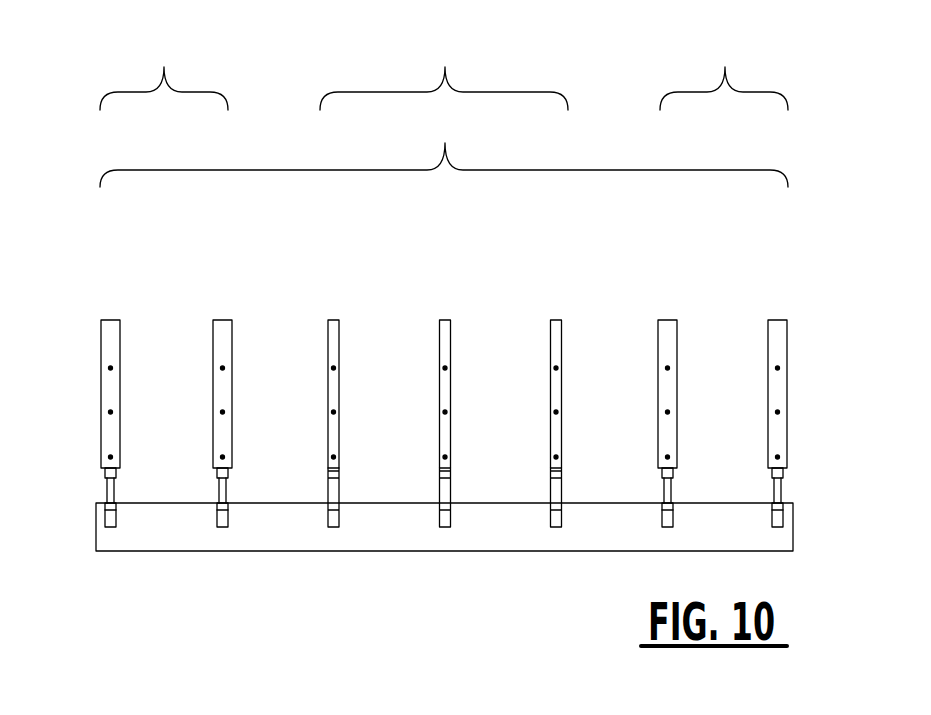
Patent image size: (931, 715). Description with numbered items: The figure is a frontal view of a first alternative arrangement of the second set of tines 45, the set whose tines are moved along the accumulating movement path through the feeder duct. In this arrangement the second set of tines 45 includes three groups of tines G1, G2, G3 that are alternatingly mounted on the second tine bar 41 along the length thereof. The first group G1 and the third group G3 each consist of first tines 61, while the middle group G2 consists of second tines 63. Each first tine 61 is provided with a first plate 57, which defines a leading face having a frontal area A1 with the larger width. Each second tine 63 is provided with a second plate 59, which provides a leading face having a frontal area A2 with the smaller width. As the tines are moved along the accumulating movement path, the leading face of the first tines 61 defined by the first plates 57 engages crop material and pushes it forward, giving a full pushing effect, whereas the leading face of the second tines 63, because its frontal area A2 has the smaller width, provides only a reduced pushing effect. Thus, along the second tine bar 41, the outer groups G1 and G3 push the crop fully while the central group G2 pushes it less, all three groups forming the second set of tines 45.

The second tine bar 41 is at (500, 525).
The second set of tines 45 is at (444, 148).
The first plate 57 is at (112, 437).
The second plate 59 is at (334, 437).
The first tine 61 is at (148, 300).
The second tine 63 is at (370, 300).
The first group of tines G1 is at (164, 70).
The second group of tines G2 is at (444, 70).
The third group of tines G3 is at (724, 70).
The frontal area of the first tines A1 is at (110, 388).
The frontal area of the second tines A2 is at (334, 388).